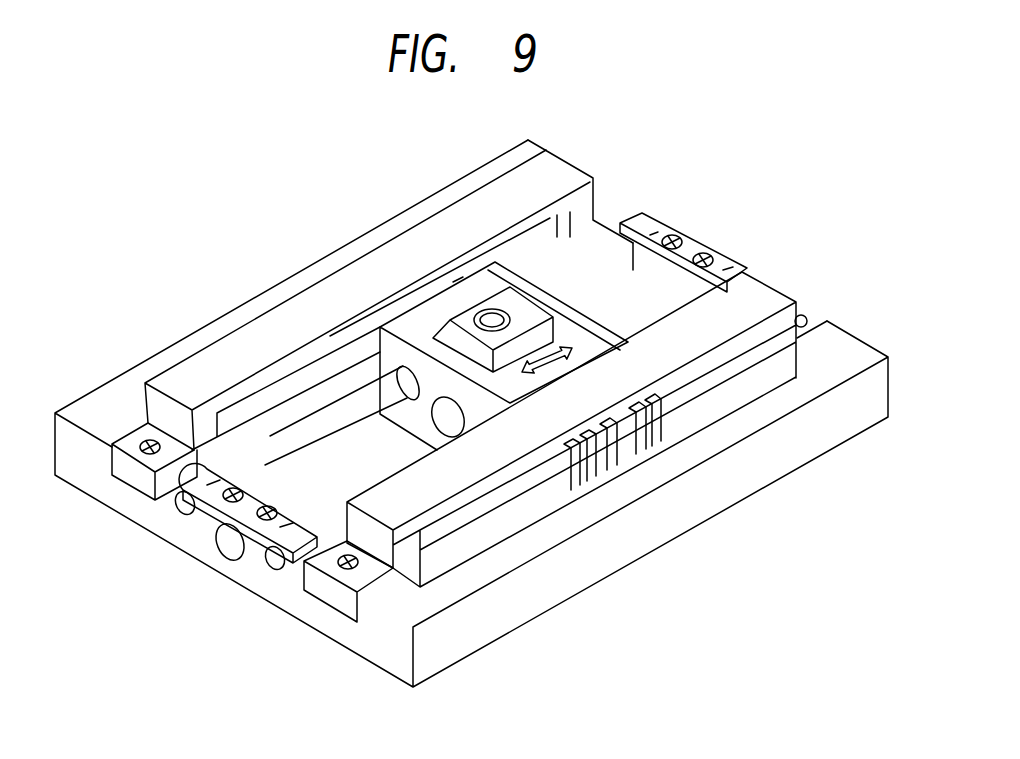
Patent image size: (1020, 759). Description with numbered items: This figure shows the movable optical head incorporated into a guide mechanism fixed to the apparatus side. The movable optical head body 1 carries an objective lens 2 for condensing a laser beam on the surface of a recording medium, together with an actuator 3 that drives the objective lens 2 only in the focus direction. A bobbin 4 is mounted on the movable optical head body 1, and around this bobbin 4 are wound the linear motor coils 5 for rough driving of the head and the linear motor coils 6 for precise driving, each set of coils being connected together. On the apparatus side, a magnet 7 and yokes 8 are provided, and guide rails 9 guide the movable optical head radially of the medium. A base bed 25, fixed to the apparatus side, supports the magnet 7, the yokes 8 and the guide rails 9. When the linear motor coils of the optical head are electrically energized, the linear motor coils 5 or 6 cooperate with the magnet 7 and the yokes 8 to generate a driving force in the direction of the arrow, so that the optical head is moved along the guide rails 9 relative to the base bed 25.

The movable optical head body 1 is at (570, 340).
The objective lens 2 is at (490, 314).
The actuator 3 is at (557, 309).
The bobbin 4 is at (600, 480).
The linear motor coils for rough driving 5 is at (635, 418).
The linear motor coils for precise driving 6 is at (655, 443).
The magnet 7 is at (518, 240).
The yokes 8 is at (605, 212).
The guide rails 9 is at (275, 566).
The base bed 25 is at (832, 343).